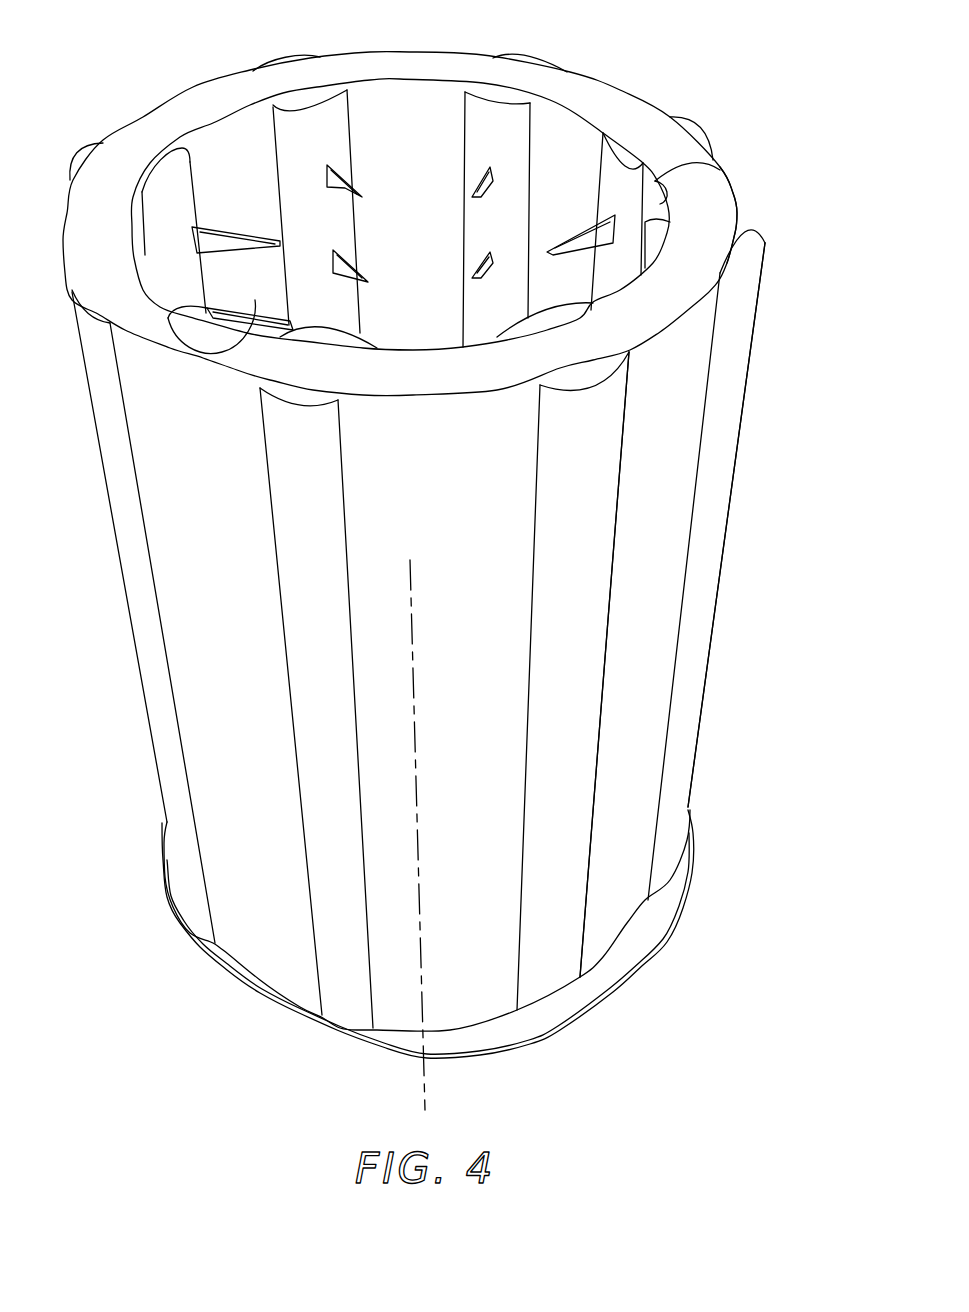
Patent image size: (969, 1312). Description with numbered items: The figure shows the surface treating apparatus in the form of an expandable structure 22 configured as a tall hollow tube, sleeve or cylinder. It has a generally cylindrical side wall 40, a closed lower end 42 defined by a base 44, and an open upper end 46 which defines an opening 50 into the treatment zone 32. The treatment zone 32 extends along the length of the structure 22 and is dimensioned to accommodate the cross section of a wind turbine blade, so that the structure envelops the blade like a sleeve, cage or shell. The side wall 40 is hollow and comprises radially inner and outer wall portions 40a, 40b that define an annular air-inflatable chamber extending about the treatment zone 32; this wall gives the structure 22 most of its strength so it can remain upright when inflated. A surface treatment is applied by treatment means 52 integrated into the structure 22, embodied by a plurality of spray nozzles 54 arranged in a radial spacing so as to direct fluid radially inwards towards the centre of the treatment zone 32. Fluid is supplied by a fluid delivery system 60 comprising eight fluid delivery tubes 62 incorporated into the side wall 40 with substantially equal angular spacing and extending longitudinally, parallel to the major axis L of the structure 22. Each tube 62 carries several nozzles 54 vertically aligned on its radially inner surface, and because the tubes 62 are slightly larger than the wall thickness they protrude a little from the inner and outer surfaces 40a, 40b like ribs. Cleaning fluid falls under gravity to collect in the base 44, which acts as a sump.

The expandable structure 22 is at (802, 234).
The treatment zone 32 is at (221, 136).
The side wall 40 is at (439, 517).
The radially inner wall portion 40a is at (720, 168).
The radially outer wall portion 40b is at (735, 190).
The closed lower end 42 is at (568, 1034).
The base 44 is at (482, 1035).
The open upper end 46 is at (440, 202).
The opening 50 is at (414, 103).
The treatment means 52 is at (312, 186).
The spray nozzles 54 is at (582, 236).
The fluid delivery system 60 is at (746, 458).
The fluid delivery tubes 62 is at (313, 122).
The major axis L is at (424, 1086).